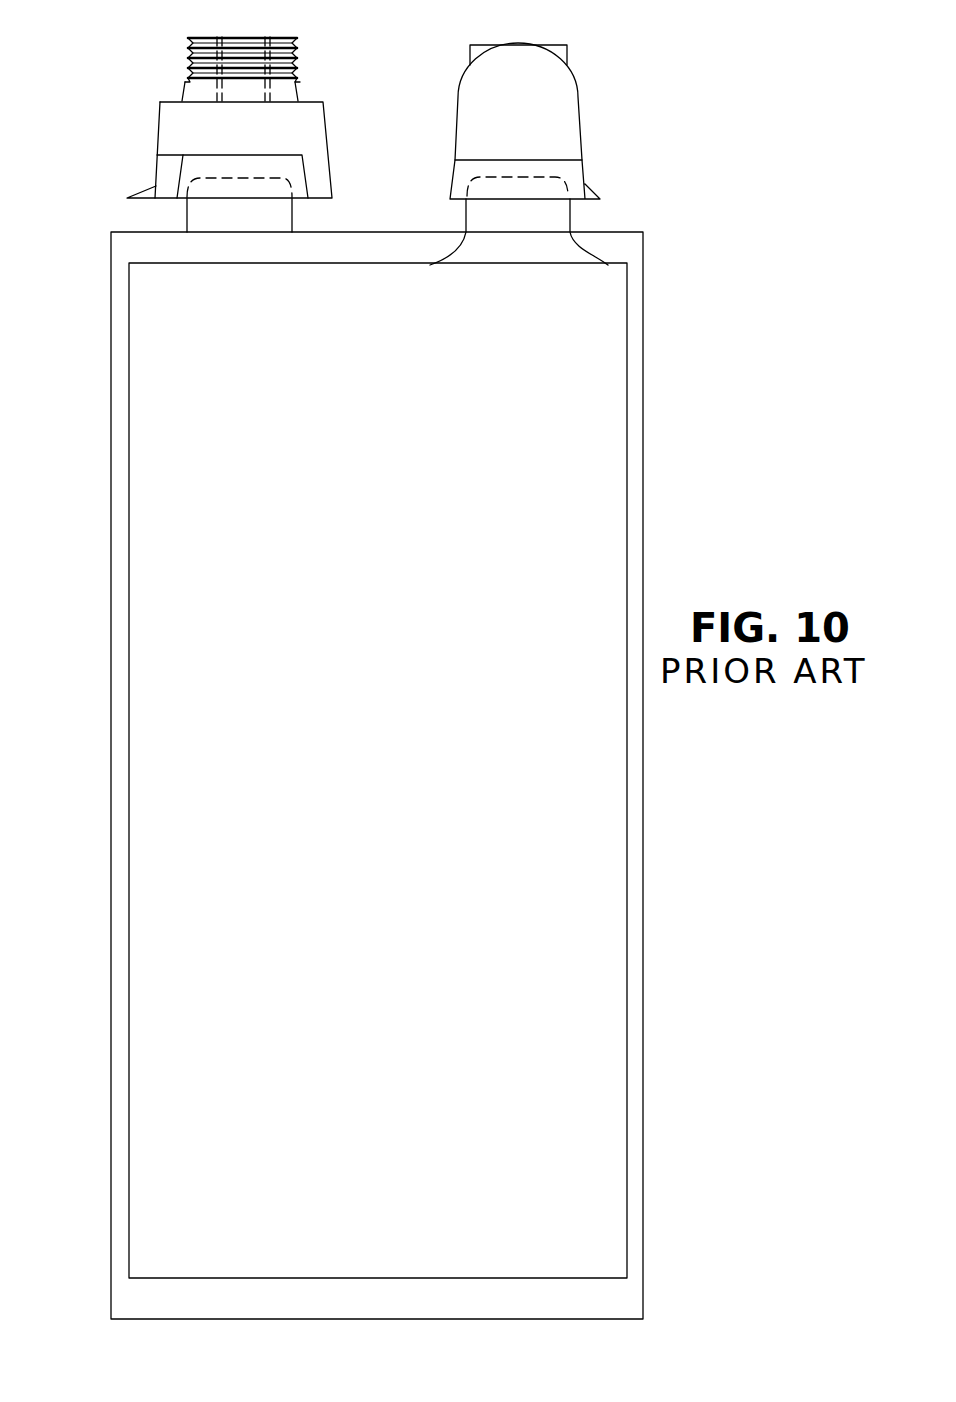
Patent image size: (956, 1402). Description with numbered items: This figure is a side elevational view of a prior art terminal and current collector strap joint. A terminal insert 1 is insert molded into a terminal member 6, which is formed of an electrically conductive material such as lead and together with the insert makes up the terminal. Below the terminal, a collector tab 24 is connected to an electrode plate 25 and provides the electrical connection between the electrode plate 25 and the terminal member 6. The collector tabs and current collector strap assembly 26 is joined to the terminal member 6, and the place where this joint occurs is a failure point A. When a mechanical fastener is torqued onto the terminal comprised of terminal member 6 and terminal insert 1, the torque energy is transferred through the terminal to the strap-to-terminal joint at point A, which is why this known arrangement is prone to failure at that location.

The terminal insert 1 is at (260, 37).
The terminal member 6 is at (209, 100).
The failure point A is at (300, 199).
The collector tab 24 is at (492, 214).
The electrode plate 25 is at (417, 547).
The collector tabs/current collector strap assembly 26 is at (565, 185).